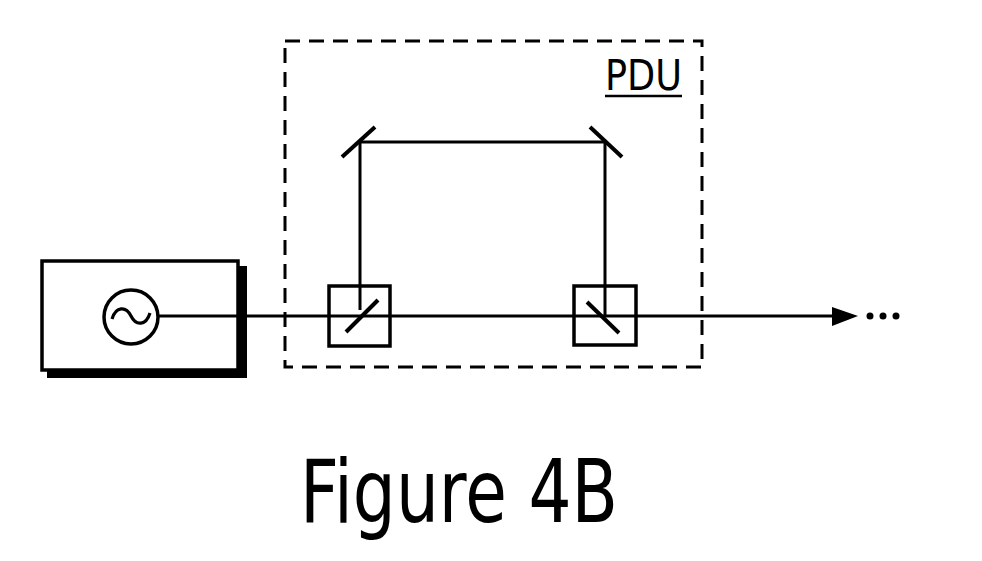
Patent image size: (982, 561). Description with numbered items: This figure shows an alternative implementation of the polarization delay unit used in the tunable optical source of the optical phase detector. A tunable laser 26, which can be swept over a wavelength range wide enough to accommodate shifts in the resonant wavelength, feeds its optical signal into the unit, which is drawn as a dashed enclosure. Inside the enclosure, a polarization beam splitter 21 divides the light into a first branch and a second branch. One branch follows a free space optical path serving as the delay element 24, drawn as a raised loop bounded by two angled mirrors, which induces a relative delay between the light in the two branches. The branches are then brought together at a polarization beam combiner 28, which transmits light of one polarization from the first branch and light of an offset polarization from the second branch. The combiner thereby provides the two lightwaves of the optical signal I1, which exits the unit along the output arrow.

The tunable laser 26 is at (130, 290).
The polarization beam splitter 21 is at (372, 285).
The delay element 24 is at (463, 140).
The polarization beam combiner 28 is at (620, 285).
The optical signal I1 is at (790, 313).